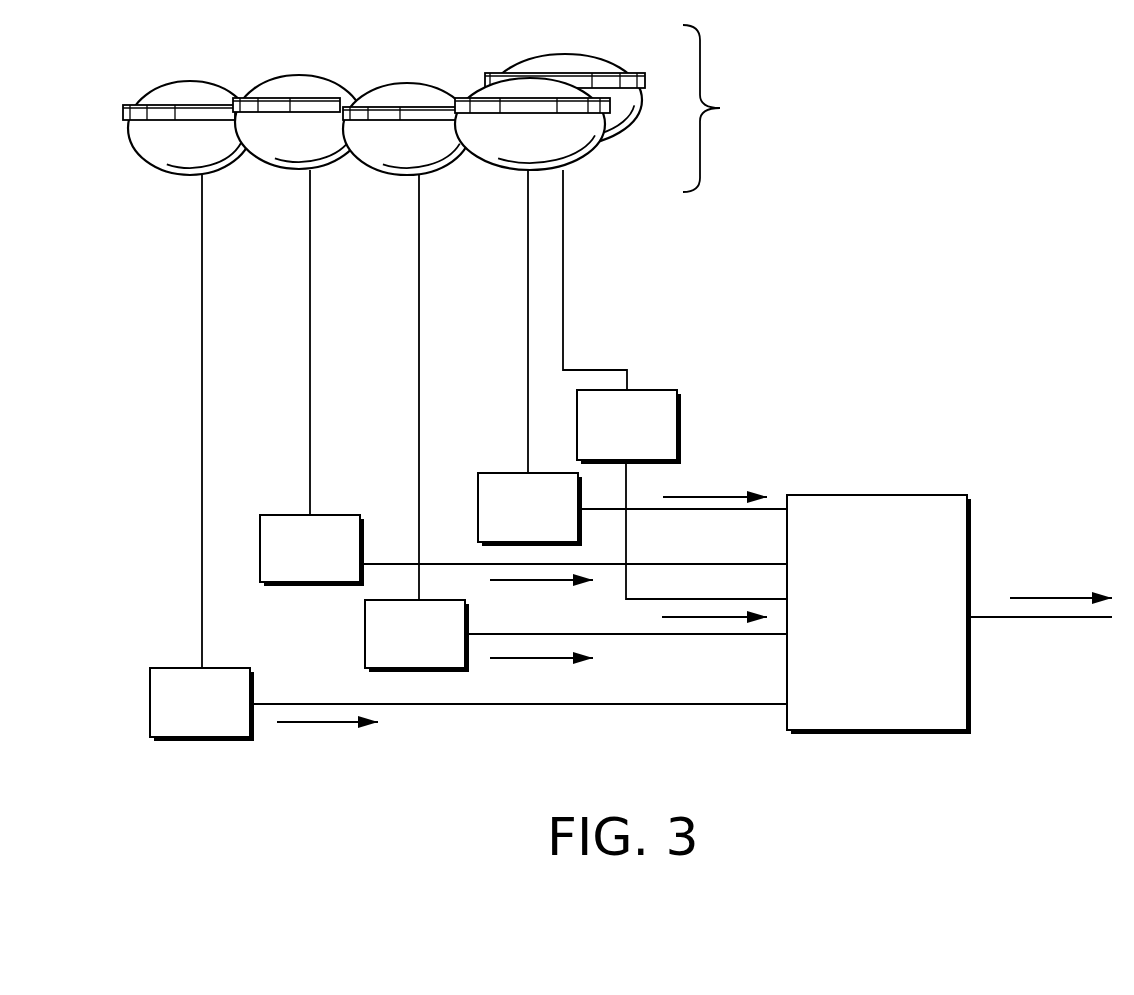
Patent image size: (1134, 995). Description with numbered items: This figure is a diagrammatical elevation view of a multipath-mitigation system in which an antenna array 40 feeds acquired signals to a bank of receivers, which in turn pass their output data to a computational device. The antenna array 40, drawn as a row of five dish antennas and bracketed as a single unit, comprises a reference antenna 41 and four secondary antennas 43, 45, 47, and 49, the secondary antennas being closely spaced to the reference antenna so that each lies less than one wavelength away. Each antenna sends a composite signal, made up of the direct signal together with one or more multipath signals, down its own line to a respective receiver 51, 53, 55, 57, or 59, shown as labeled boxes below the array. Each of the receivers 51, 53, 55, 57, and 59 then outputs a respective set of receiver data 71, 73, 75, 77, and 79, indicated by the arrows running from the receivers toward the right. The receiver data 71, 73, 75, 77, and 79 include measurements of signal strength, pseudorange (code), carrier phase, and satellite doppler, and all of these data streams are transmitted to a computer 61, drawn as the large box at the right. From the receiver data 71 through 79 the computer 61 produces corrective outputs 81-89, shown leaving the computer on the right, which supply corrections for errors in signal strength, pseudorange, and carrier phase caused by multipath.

The antenna array 40 is at (722, 108).
The reference antenna 41 is at (398, 85).
The secondary antenna 43 is at (178, 83).
The secondary antenna 45 is at (582, 53).
The secondary antenna 47 is at (582, 160).
The secondary antenna 49 is at (285, 77).
The receiver 51 is at (576, 635).
The receiver 53 is at (468, 703).
The receiver 55 is at (682, 494).
The receiver 57 is at (632, 508).
The receiver 59 is at (523, 549).
The computer 61 is at (878, 613).
The receiver data 71 is at (528, 658).
The receiver data 73 is at (320, 722).
The receiver data 75 is at (700, 617).
The receiver data 77 is at (697, 497).
The receiver data 79 is at (528, 580).
The corrective outputs 81-89 is at (1050, 597).